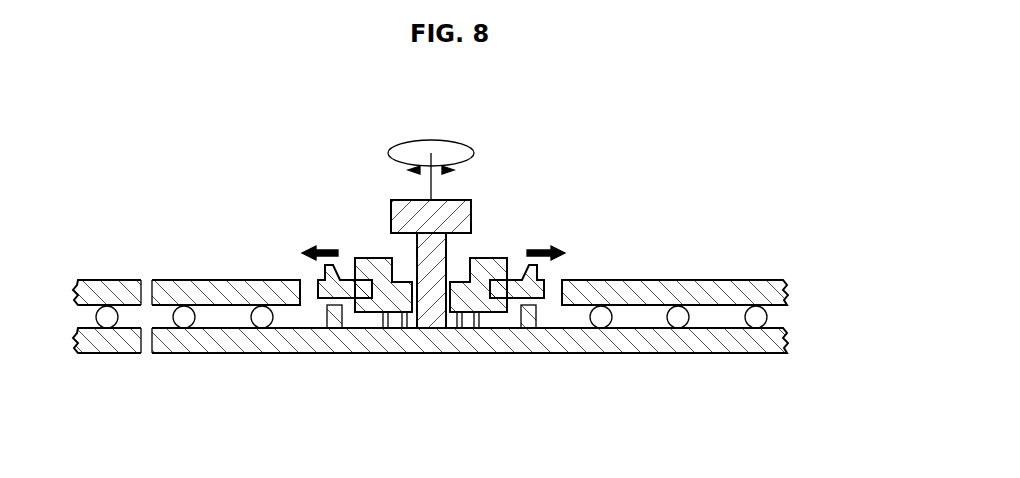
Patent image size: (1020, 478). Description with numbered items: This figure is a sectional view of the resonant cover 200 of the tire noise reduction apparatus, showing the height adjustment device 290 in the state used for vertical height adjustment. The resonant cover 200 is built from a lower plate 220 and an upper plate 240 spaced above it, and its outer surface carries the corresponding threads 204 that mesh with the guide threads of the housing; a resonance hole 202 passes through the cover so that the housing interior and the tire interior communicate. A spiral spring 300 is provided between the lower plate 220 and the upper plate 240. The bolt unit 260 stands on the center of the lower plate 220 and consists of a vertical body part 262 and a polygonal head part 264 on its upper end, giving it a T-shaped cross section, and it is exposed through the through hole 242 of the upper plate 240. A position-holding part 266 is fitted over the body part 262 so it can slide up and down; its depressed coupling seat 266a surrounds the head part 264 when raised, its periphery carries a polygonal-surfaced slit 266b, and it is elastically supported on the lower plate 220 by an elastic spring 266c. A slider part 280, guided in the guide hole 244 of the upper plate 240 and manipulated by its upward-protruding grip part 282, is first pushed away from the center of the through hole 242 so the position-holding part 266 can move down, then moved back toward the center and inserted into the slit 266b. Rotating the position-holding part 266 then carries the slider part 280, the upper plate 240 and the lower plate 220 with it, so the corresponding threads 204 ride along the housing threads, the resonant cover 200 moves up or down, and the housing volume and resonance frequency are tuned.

The resonant cover 200 is at (675, 92).
The resonance hole 202 is at (145, 353).
The corresponding threads 204 is at (478, 328).
The lower plate 220 is at (737, 342).
The upper plate 240 is at (687, 280).
The through hole 242 is at (343, 303).
The guide hole 244 is at (548, 300).
The bolt unit 260 is at (393, 289).
The body part 262 is at (425, 262).
The head part 264 is at (415, 208).
The position-holding part 266 is at (396, 305).
The depressed coupling seat 266a is at (462, 282).
The slit 266b is at (513, 327).
The elastic spring 266c is at (453, 328).
The slider part 280 is at (322, 300).
The grip part 282 is at (325, 268).
The height adjustment device 290 is at (507, 257).
The spiral spring 300 is at (675, 318).